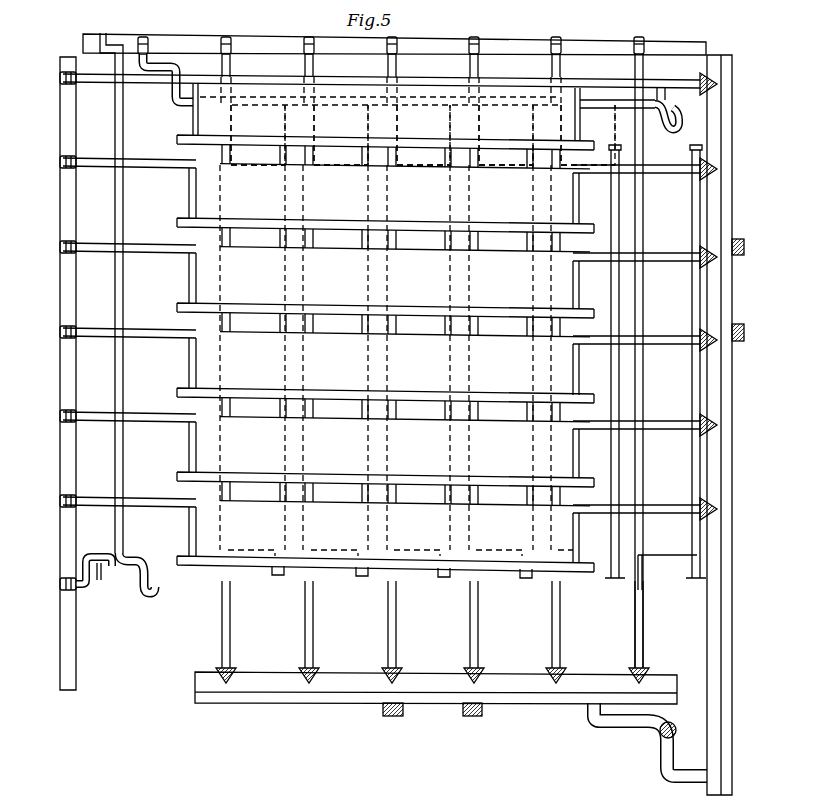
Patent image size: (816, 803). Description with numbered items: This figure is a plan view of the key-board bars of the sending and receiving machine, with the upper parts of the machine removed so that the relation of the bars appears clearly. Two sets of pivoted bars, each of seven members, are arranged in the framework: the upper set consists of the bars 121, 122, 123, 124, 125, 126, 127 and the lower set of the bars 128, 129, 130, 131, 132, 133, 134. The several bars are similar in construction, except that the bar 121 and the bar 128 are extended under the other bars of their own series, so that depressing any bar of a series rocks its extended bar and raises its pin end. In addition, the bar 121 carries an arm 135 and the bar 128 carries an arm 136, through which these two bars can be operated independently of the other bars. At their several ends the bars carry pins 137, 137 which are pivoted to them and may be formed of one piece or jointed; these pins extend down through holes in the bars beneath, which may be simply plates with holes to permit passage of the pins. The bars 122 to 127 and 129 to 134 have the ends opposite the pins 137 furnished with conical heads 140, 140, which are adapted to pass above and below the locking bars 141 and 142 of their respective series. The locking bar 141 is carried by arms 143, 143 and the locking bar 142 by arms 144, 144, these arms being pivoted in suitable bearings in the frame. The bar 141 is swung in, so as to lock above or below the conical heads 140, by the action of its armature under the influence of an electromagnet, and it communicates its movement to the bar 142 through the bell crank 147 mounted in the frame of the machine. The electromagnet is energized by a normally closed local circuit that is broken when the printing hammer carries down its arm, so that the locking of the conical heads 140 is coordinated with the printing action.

The pivoted bar 121 is at (125, 533).
The pivoted bar 122 is at (129, 518).
The pivoted bar 123 is at (129, 434).
The pivoted bar 124 is at (129, 350).
The pivoted bar 125 is at (129, 265).
The pivoted bar 126 is at (129, 180).
The pivoted bar 127 is at (101, 84).
The pivoted bar 128 is at (176, 104).
The pivoted bar 129 is at (218, 128).
The pivoted bar 130 is at (306, 128).
The pivoted bar 131 is at (392, 128).
The pivoted bar 132 is at (476, 128).
The pivoted bar 133 is at (570, 128).
The pivoted bar 134 is at (643, 153).
The arm 135 is at (141, 590).
The arm 136 is at (682, 114).
The pins 137 is at (148, 40).
The conical heads 140 is at (718, 170).
The locking bar 141 is at (734, 305).
The locking bar 142 is at (420, 690).
The arms 143 is at (745, 247).
The arms 144 is at (465, 716).
The bell crank 147 is at (663, 768).